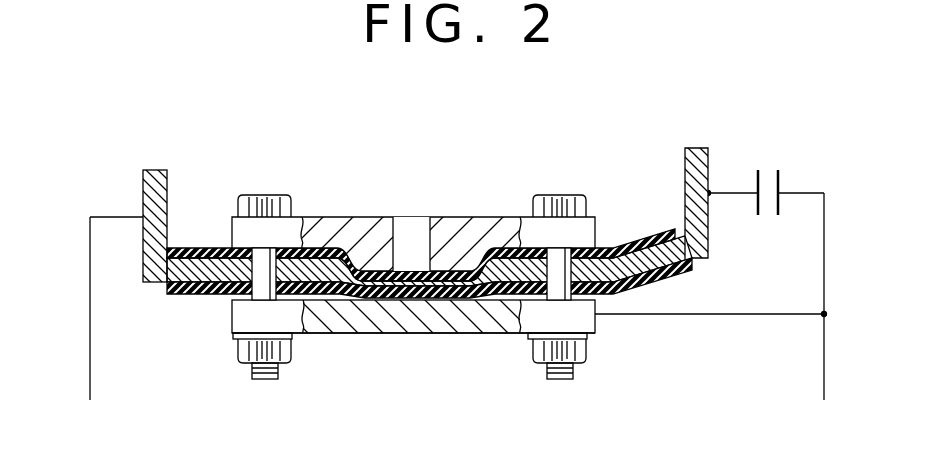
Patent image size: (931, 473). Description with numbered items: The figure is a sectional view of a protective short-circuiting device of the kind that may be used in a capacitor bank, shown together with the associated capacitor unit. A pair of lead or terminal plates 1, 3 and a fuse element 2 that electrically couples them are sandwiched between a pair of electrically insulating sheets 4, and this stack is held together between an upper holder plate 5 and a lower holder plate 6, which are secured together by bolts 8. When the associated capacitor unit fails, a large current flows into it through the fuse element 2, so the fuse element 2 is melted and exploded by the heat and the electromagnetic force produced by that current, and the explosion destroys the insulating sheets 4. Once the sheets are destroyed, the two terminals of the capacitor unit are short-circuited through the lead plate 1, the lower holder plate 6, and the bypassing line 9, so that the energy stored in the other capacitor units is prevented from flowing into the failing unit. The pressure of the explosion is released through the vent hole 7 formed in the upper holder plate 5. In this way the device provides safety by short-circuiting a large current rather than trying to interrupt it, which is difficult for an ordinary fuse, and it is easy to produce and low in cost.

The lead plate 1 is at (684, 174).
The fuse element 2 is at (433, 316).
The terminal plate 3 is at (151, 170).
The electrically insulating sheets 4 is at (212, 292).
The upper holder plate 5 is at (348, 227).
The lower holder plate 6 is at (355, 316).
The vent hole 7 is at (415, 227).
The bolts 8 is at (260, 196).
The bypassing line 9 is at (697, 316).